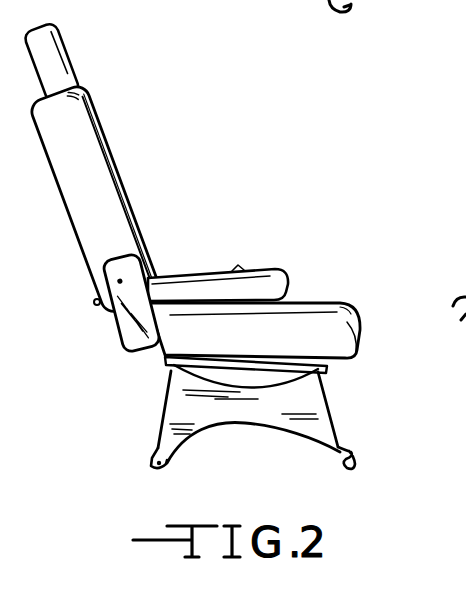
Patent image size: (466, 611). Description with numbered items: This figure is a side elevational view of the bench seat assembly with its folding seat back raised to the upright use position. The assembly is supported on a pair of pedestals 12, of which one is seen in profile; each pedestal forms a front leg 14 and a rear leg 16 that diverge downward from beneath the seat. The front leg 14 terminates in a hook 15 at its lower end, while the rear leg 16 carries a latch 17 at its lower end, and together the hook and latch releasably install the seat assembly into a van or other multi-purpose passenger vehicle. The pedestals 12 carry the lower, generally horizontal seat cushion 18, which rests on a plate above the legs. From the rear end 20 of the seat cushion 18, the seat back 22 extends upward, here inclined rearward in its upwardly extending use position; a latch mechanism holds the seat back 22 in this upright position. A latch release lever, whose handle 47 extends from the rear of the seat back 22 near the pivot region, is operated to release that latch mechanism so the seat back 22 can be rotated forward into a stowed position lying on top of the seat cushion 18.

The pedestal 12 is at (322, 406).
The front leg 14 is at (340, 443).
The hook 15 is at (355, 464).
The rear leg 16 is at (158, 438).
The latch 17 is at (156, 447).
The seat cushion 18 is at (356, 309).
The rear end 20 is at (123, 337).
The seat back 22 is at (95, 121).
The handle 47 is at (95, 304).